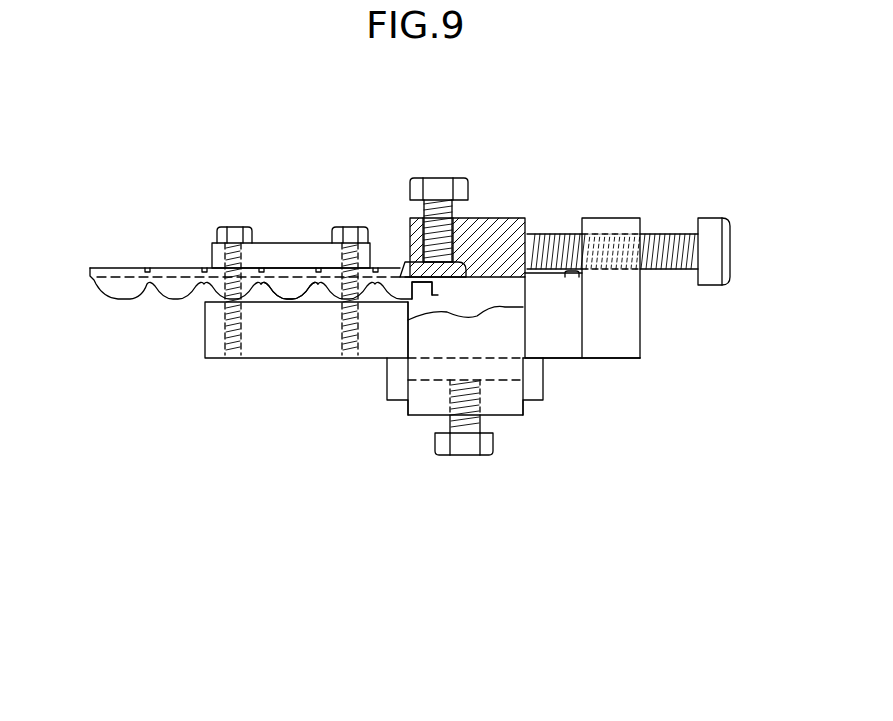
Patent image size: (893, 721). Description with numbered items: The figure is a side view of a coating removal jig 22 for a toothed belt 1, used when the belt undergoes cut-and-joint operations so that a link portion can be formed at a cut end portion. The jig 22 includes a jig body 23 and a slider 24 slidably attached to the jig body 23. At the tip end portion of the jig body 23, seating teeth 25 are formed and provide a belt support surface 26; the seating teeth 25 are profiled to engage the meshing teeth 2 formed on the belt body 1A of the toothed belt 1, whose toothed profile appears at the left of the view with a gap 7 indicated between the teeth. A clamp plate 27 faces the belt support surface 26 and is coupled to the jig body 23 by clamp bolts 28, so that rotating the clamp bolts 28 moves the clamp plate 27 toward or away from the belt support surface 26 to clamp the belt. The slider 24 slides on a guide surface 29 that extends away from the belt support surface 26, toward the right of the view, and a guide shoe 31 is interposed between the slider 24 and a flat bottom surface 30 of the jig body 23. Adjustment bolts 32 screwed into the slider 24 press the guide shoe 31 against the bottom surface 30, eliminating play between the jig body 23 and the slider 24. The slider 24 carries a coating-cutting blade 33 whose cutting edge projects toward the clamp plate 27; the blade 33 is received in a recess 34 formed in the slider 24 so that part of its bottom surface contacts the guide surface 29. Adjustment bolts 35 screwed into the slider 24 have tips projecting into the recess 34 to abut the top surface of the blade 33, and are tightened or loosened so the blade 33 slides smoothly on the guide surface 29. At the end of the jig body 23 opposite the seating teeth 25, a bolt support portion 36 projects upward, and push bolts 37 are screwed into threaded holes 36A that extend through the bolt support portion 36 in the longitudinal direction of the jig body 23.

The toothed belt 1 is at (116, 252).
The belt body 1A is at (396, 294).
The meshing teeth 2 is at (300, 302).
The tooth gap 7 is at (106, 284).
The coating removal jig 22 is at (650, 378).
The jig body 23 is at (595, 342).
The slider 24 is at (505, 218).
The seating teeth 25 is at (260, 300).
The belt support surface 26 is at (287, 294).
The clamp plate 27 is at (307, 248).
The clamp bolts 28 is at (225, 228).
The guide surface 29 is at (578, 276).
The flat bottom surface 30 is at (617, 363).
The guide shoe 31 is at (385, 390).
The adjustment bolts 32 is at (440, 445).
The coating-cutting blade 33 is at (468, 310).
The recess 34 is at (445, 275).
The adjustment bolts 35 is at (443, 178).
The bolt support portion 36 is at (608, 223).
The threaded holes 36A is at (615, 268).
The push bolts 37 is at (710, 220).